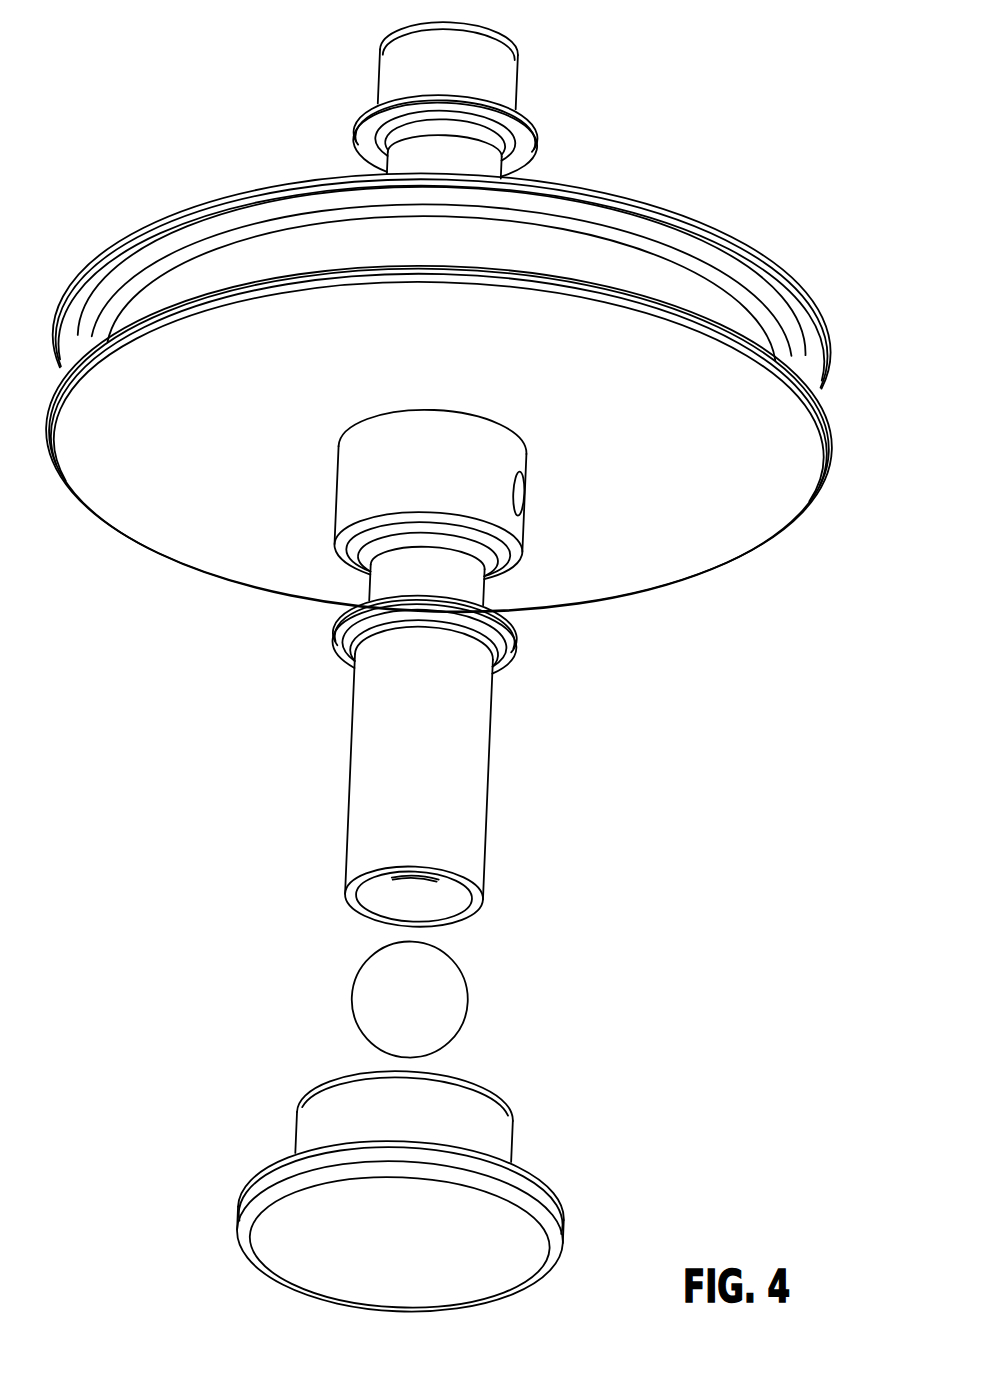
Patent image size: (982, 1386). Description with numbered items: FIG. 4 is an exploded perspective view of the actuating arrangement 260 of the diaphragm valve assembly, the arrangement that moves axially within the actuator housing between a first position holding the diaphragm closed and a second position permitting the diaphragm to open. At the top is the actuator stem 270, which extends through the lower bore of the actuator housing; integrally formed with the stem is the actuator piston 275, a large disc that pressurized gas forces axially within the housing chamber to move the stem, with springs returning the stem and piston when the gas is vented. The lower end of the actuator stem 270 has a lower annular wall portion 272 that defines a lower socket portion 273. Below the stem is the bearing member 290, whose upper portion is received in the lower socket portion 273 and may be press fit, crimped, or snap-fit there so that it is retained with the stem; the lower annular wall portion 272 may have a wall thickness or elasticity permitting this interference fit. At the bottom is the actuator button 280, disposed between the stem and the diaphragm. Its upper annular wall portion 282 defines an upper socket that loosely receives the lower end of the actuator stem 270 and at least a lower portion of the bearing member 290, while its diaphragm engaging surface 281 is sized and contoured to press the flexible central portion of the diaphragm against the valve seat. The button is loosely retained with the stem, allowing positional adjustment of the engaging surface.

The actuating arrangement 260 is at (440, 676).
The actuator stem 270 is at (457, 678).
The lower annular wall portion 272 is at (483, 870).
The lower socket portion 273 is at (442, 903).
The actuator piston 275 is at (727, 533).
The actuator button 280 is at (430, 1185).
The diaphragm engaging surface 281 is at (488, 1282).
The upper annular wall portion 282 is at (318, 1102).
The bearing member 290 is at (438, 1010).